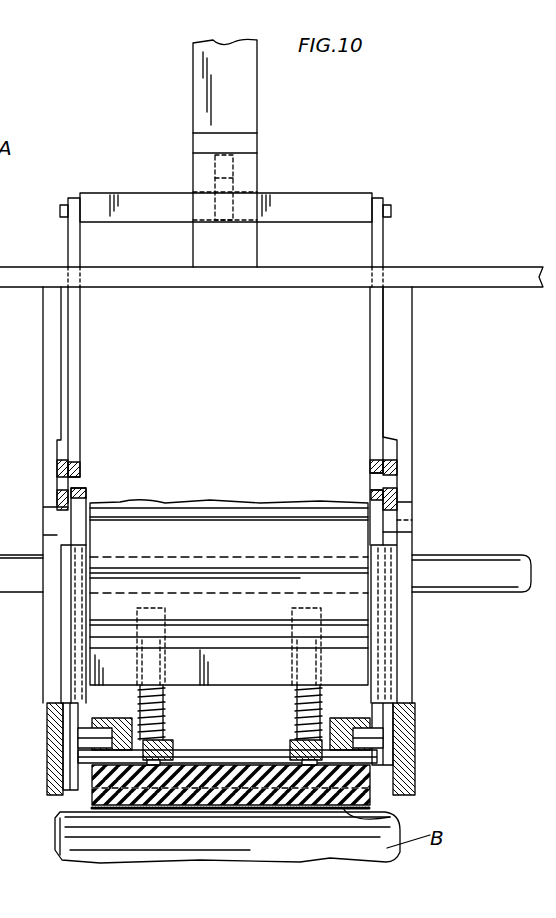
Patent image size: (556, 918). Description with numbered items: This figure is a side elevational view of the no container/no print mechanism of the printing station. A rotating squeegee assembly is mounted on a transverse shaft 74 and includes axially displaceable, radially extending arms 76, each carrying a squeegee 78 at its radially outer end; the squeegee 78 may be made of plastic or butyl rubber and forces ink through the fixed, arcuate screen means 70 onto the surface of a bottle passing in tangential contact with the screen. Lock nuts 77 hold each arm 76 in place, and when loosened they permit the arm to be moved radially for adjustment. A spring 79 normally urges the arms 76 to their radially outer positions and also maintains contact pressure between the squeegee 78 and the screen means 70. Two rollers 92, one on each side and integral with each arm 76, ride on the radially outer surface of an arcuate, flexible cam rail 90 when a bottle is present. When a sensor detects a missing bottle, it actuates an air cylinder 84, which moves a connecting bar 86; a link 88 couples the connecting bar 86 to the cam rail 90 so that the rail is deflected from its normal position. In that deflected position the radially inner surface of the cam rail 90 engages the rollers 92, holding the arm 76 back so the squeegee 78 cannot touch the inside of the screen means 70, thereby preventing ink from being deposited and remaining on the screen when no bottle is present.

The air cylinder 84 is at (192, 126).
The connecting bar 86 is at (80, 390).
The link 88 is at (62, 482).
The cam rail 90 is at (85, 495).
The transverse shaft 74 is at (473, 560).
The spring 79 is at (138, 692).
The arm 76 is at (293, 705).
The lock nut 77 is at (173, 746).
The roller 92 is at (80, 747).
The squeegee 78 is at (273, 800).
The screen means 70 is at (388, 815).